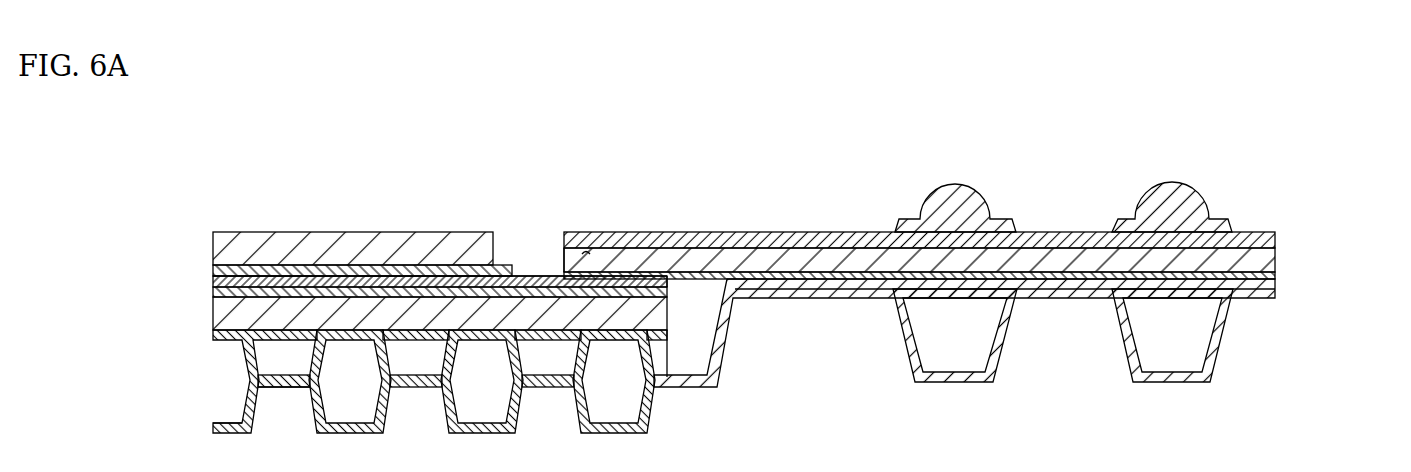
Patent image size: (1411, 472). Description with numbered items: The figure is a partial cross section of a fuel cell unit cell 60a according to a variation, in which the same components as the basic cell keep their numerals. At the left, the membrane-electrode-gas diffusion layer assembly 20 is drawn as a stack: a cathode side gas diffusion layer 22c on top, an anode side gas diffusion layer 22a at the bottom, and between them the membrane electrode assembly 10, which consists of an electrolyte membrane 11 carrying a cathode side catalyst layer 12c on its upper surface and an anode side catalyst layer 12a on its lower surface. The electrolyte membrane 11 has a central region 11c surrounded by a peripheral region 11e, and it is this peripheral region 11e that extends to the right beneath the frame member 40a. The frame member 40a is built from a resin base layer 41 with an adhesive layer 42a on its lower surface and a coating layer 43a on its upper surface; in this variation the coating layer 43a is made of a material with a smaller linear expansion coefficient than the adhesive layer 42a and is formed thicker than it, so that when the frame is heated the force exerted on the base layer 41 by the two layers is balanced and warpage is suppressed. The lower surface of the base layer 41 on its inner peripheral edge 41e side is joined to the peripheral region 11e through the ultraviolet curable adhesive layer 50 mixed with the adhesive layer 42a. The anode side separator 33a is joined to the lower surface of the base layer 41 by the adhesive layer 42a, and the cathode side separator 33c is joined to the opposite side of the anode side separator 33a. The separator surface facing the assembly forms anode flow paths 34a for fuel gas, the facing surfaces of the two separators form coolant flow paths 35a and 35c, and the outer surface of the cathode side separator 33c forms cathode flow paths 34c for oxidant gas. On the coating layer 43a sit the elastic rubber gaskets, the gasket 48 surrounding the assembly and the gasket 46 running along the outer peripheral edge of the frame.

The unit cell 60a is at (175, 158).
The membrane-electrode-gas diffusion layer assembly 20 is at (56, 228).
The cathode side gas diffusion layer 22c is at (227, 241).
The membrane electrode assembly 10 is at (140, 243).
The cathode side catalyst layer 12c is at (217, 270).
The electrolyte membrane 11 is at (217, 281).
The anode side catalyst layer 12a is at (217, 291).
The anode side gas diffusion layer 22a is at (225, 318).
The central region 11c is at (452, 283).
The peripheral region 11e is at (627, 283).
The frame member 40a is at (1336, 222).
The coating layer 43a is at (1277, 241).
The base layer 41 is at (1277, 260).
The adhesive layer 42a is at (1277, 285).
The inner peripheral edge 41e is at (563, 255).
The adhesive layer 50 is at (586, 266).
The anode side separator 33a is at (718, 338).
The cathode side separator 33c is at (731, 316).
The gasket 48 is at (951, 197).
The gasket 46 is at (1170, 197).
The coolant flow path 35a is at (233, 372).
The coolant flow path 35c is at (233, 412).
The anode flow path 34a is at (300, 360).
The cathode flow path 34c is at (300, 422).